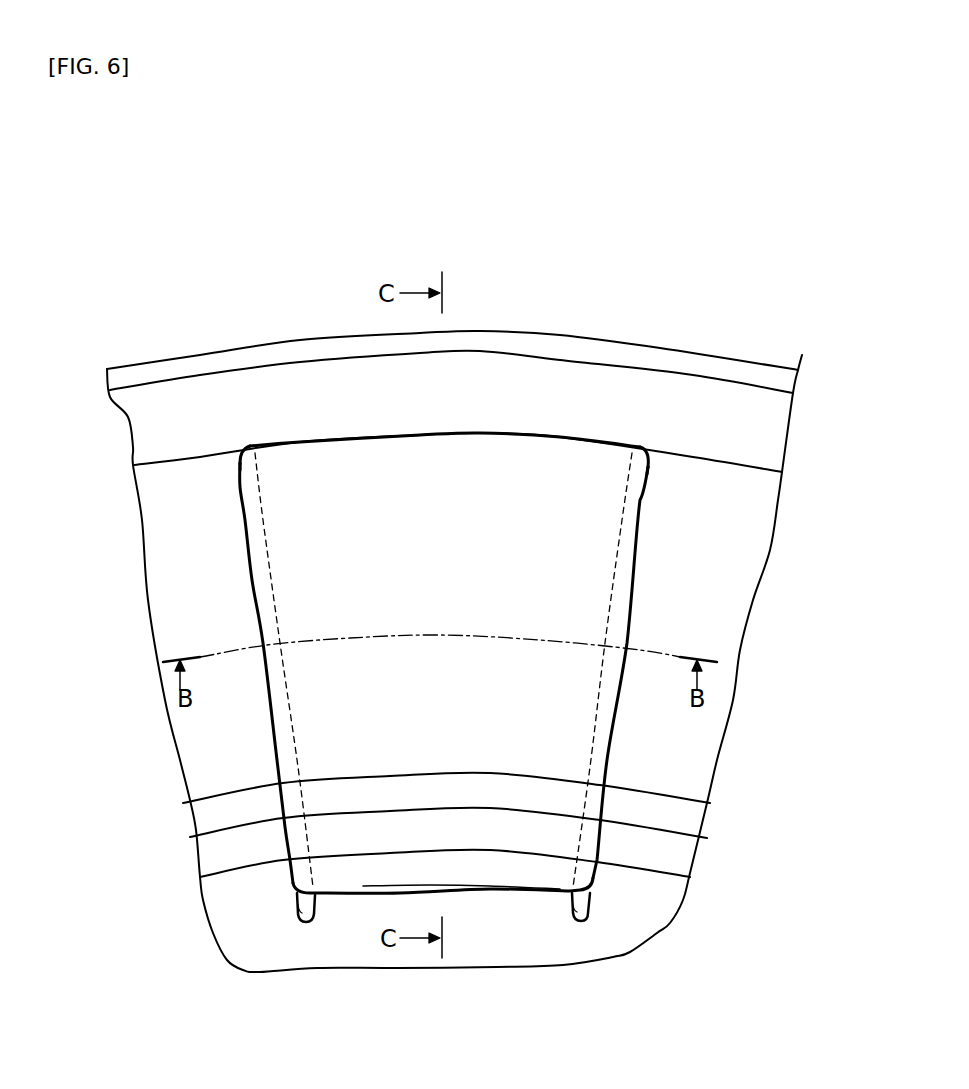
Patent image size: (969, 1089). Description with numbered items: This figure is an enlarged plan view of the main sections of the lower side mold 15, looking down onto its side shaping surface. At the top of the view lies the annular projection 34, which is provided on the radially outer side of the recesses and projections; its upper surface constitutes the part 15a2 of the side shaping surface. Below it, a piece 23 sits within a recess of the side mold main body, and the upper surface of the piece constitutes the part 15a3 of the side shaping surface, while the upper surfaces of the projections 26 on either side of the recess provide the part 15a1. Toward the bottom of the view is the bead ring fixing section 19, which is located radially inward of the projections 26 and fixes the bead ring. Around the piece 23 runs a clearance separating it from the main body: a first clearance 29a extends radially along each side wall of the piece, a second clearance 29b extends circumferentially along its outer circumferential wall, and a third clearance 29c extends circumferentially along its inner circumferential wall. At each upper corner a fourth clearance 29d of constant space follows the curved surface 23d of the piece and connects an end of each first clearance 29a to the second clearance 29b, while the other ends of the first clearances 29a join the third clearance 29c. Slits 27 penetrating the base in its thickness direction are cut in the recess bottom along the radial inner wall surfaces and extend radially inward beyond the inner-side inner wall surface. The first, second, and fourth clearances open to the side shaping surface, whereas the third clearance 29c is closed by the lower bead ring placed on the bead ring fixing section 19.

The lower side mold 15 is at (442, 106).
The part of side shaping surface on projection 15a1 is at (195, 577).
The part of side shaping surface on annular projection 15a2 is at (332, 408).
The part of side shaping surface on piece 15a3 is at (485, 487).
The bead ring fixing section 19 is at (517, 948).
The piece 23 is at (520, 713).
The curved surface of piece 23d is at (240, 455).
The projection 26 is at (197, 525).
The slit 27 is at (300, 923).
The first clearance 29a is at (277, 717).
The second clearance 29b is at (357, 437).
The third clearance 29c is at (357, 877).
The fourth clearance 29d is at (243, 447).
The annular projection 34 is at (565, 355).